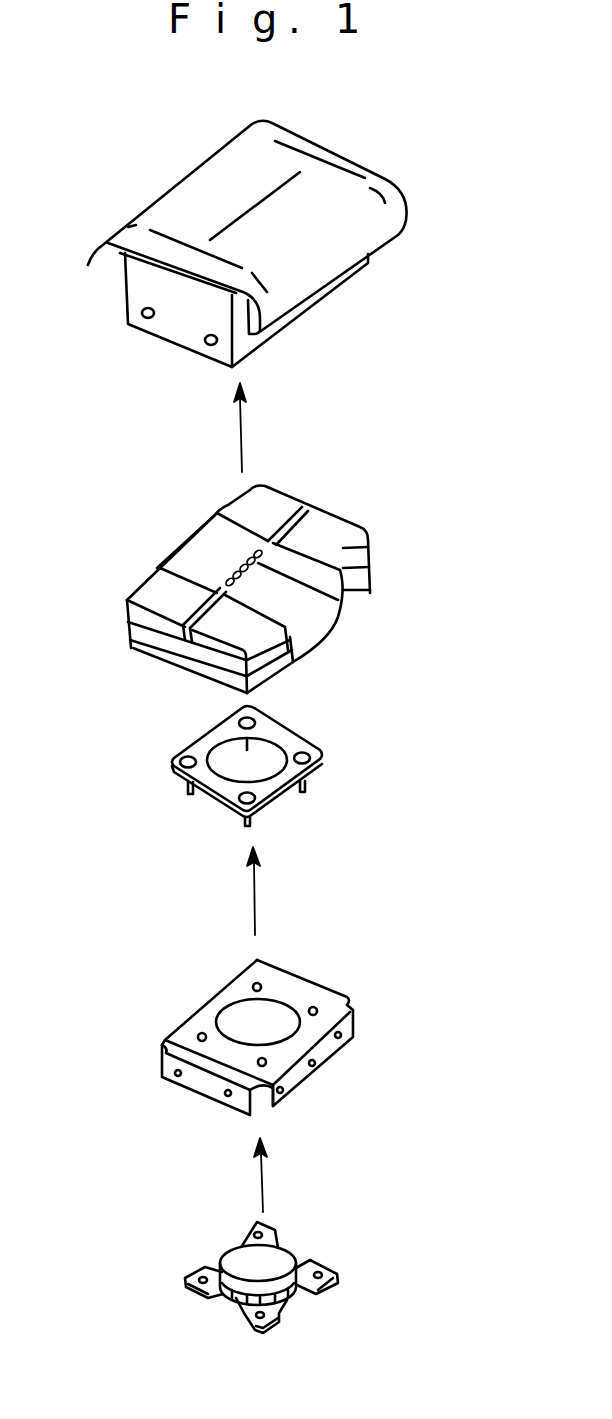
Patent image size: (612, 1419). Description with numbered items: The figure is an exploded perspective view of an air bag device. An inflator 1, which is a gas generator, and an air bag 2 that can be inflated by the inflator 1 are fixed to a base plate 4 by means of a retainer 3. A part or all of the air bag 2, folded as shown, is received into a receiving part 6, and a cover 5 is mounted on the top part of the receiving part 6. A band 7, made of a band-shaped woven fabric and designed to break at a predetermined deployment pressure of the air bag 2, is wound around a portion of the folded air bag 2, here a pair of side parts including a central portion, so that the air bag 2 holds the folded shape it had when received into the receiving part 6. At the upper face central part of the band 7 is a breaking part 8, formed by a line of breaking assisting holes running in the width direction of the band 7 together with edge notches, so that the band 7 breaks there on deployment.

The inflator 1 is at (457, 1195).
The air bag 2 is at (447, 512).
The retainer 3 is at (455, 685).
The base plate 4 is at (443, 932).
The cover 5 is at (443, 150).
The receiving part 6 is at (177, 324).
The band 7 is at (200, 545).
The breaking part 8 is at (302, 600).